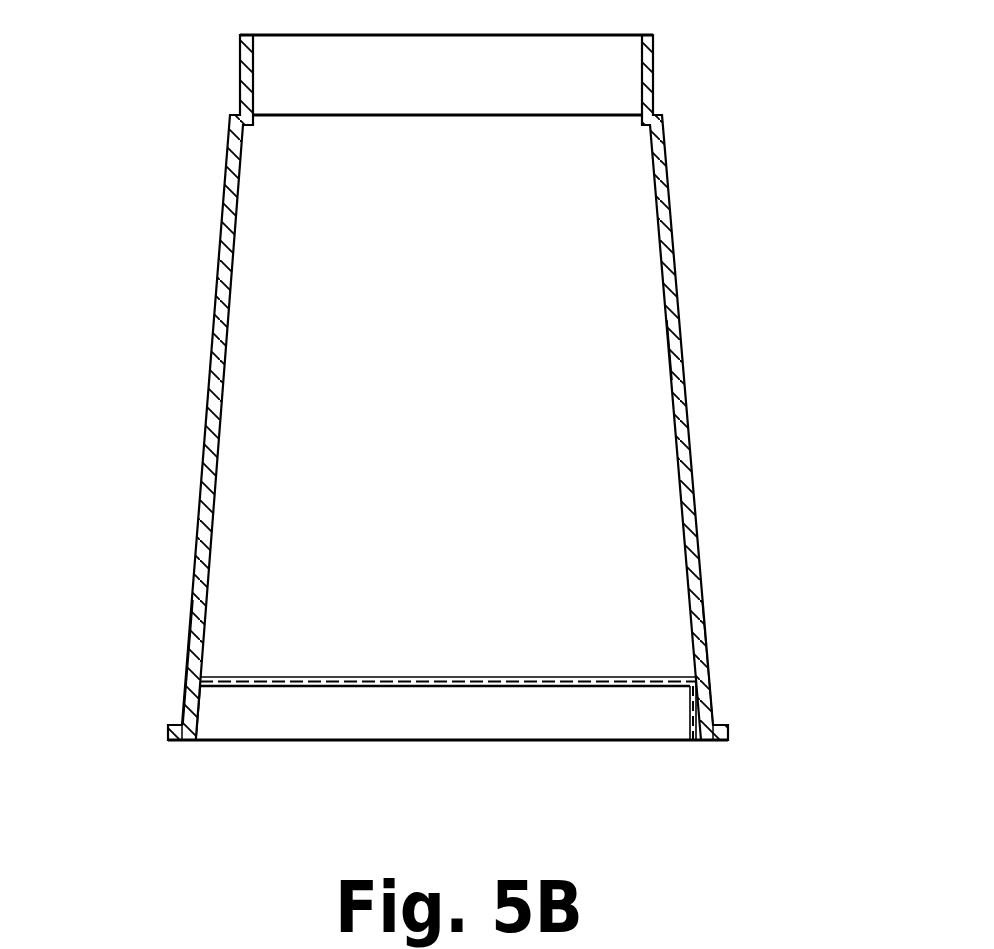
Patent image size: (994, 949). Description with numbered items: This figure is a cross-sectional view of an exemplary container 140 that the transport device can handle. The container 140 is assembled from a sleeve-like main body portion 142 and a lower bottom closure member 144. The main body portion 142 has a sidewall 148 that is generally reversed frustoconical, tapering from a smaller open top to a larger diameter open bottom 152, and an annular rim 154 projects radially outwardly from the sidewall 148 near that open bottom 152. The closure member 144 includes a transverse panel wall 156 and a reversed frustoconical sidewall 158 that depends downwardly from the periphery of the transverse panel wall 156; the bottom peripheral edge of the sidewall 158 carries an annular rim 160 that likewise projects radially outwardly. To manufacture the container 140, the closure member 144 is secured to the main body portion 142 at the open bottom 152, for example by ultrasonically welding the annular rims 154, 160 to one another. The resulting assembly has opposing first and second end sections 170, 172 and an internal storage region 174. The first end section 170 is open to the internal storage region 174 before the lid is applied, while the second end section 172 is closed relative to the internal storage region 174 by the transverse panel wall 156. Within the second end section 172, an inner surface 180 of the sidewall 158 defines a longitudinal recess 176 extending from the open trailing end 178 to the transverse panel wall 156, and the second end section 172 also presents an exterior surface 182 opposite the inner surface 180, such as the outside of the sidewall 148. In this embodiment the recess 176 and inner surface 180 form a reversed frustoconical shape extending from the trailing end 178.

The container 140 is at (103, 226).
The main body portion 142 is at (203, 437).
The bottom closure member 144 is at (230, 741).
The sidewall 148 is at (688, 480).
The open bottom 152 is at (180, 740).
The annular rim 154 is at (718, 722).
The transverse panel wall 156 is at (583, 677).
The sidewall 158 is at (200, 705).
The annular rim 160 is at (728, 738).
The first end section 170 is at (674, 138).
The second end section 172 is at (723, 646).
The internal storage region 174 is at (612, 345).
The longitudinal recess 176 is at (570, 717).
The trailing end 178 is at (690, 740).
The inner surface 180 is at (693, 703).
The exterior surface 182 is at (188, 660).